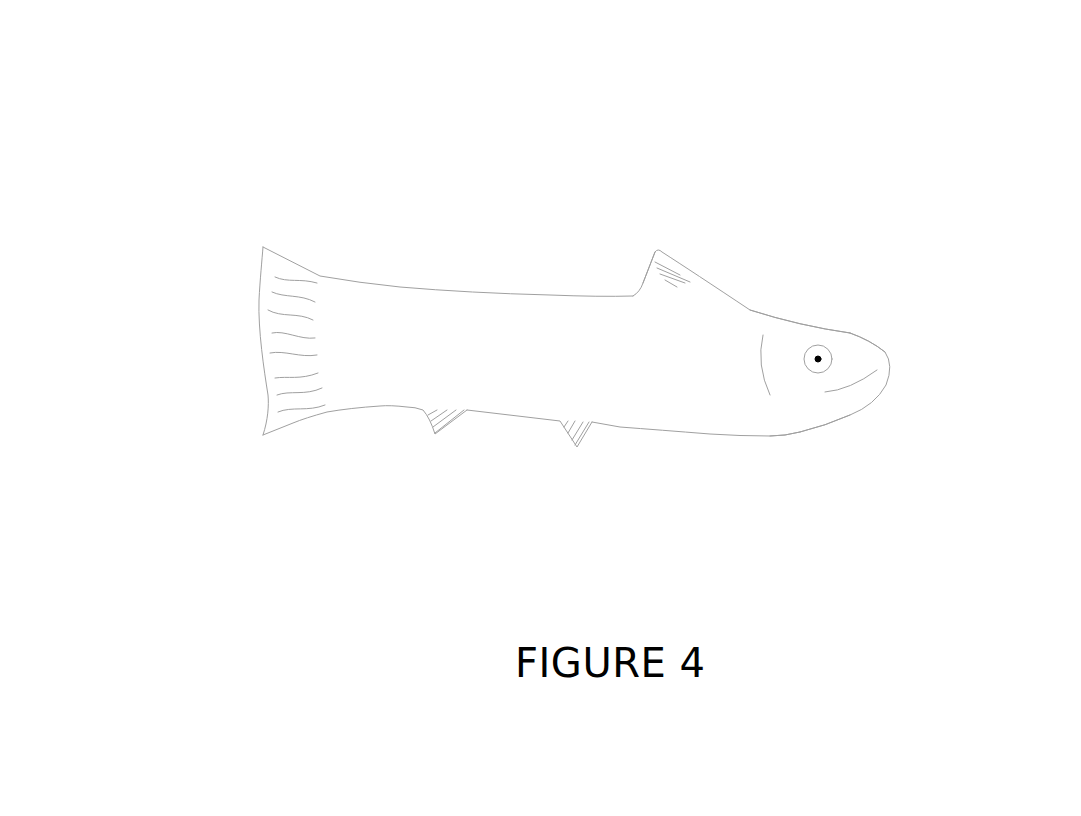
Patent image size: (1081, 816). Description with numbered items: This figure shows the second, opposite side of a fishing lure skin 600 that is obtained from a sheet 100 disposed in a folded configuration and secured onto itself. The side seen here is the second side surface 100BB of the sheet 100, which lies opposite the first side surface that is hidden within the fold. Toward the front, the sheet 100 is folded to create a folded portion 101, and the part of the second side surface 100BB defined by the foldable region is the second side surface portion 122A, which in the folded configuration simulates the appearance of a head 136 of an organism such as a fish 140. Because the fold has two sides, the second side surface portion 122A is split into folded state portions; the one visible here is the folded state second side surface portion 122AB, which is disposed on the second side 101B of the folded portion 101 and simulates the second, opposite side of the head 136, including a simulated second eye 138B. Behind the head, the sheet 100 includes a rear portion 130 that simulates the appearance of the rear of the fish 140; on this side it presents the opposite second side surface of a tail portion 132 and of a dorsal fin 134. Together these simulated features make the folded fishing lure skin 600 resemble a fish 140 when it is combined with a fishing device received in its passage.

The sheet 100 is at (537, 120).
The fishing lure skin 600 is at (464, 230).
The second side surface 100BB is at (582, 361).
The tail portion 132 is at (275, 247).
The dorsal fin 134 is at (652, 250).
The folded portion 101 is at (793, 270).
The second side of the folded portion 101B is at (802, 332).
The head 136 is at (887, 323).
The second eye 138B is at (832, 357).
The fish 140 is at (925, 413).
The second side surface portion 122A is at (782, 428).
The folded state second side surface portion 122AB is at (805, 403).
The rear portion 130 is at (600, 455).